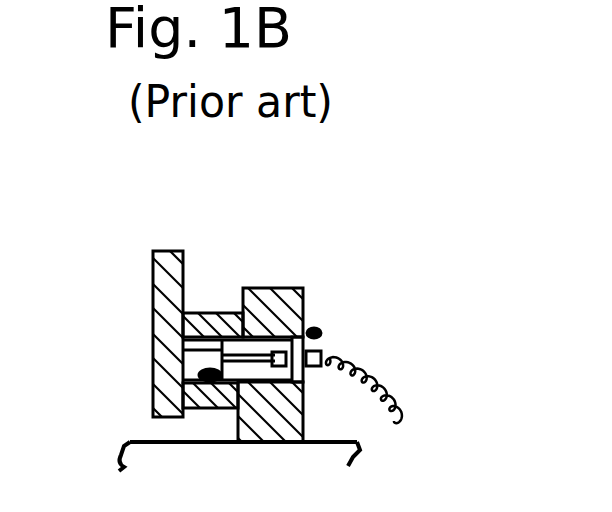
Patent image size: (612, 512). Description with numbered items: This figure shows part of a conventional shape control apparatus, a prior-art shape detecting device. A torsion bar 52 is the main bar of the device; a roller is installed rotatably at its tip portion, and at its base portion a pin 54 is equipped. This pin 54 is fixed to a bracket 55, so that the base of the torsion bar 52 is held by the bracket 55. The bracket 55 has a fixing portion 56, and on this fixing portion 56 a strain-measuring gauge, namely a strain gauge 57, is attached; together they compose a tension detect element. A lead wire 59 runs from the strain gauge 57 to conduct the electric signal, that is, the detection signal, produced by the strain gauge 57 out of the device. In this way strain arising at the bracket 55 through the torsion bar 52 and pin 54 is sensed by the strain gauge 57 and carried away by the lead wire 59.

The torsion bar 52 is at (153, 267).
The pin 54 is at (207, 313).
The bracket 55 is at (302, 290).
The fixing portion 56 is at (316, 330).
The strain gauge 57 is at (222, 358).
The lead wire 59 is at (378, 372).